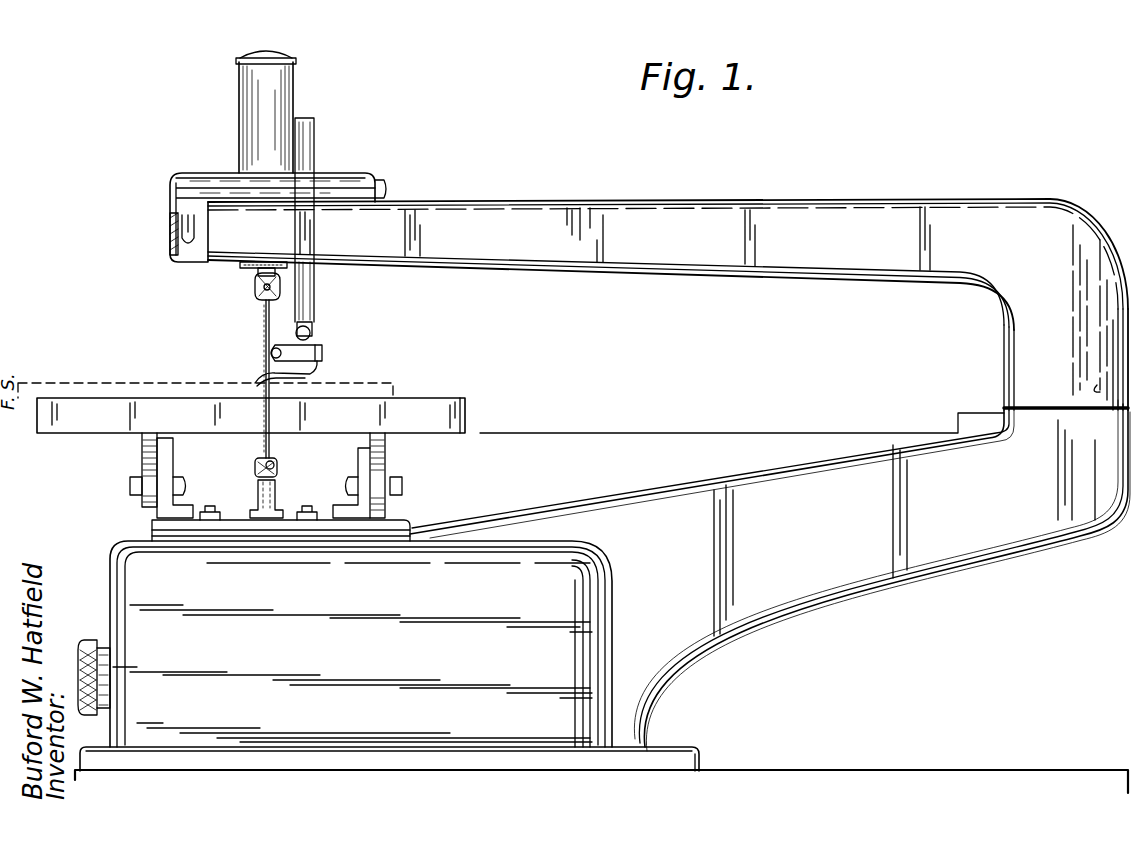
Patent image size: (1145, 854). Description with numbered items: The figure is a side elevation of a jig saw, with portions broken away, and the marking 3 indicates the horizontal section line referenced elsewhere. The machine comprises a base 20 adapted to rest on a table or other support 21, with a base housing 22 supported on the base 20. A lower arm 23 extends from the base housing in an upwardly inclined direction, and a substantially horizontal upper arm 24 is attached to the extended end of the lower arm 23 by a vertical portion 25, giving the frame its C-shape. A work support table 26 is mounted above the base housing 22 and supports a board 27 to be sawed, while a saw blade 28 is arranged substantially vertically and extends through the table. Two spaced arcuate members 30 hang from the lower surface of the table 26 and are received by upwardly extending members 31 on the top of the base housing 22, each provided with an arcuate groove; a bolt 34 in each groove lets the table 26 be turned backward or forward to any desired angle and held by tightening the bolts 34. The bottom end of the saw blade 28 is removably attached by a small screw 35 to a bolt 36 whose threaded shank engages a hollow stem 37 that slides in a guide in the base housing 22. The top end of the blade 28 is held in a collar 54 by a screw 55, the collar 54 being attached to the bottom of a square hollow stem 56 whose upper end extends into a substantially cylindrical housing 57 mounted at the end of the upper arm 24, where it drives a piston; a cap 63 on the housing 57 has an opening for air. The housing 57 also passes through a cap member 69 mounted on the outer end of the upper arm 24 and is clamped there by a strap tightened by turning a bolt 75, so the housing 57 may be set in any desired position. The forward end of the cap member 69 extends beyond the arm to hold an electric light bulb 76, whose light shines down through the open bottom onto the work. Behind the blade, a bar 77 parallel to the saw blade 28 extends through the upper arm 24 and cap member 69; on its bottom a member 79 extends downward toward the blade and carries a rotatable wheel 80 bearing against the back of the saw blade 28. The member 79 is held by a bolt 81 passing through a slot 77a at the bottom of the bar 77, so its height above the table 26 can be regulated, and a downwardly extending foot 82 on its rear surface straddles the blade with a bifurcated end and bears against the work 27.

The section line indicator 3 is at (1102, 380).
The base 20 is at (698, 746).
The table or other support 21 is at (910, 770).
The base housing 22 is at (118, 550).
The lower arm 23 is at (903, 570).
The upper arm 24 is at (838, 200).
The vertical portion 25 is at (1000, 360).
The work support table 26 is at (440, 402).
The board 27 is at (396, 382).
The saw blade 28 is at (264, 317).
The arcuate members 30 is at (145, 440).
The upwardly extending members 31 is at (170, 448).
The bolt 34 is at (130, 486).
The small screw 35 is at (256, 466).
The bolt 36 is at (276, 464).
The hollow stem 37 is at (278, 490).
The collar 54 is at (256, 287).
The screw 55 is at (262, 291).
The hollow stem 56 is at (240, 266).
The cylindrical housing 57 is at (292, 101).
The cap 63 is at (278, 55).
The cap member 69 is at (355, 176).
The bolt 75 is at (388, 188).
The electric light bulb 76 is at (170, 233).
The bar 77 is at (314, 296).
The slot 77a is at (313, 319).
The member 79 is at (323, 353).
The rotatable wheel 80 is at (270, 350).
The bolt 81 is at (311, 334).
The foot 82 is at (314, 376).